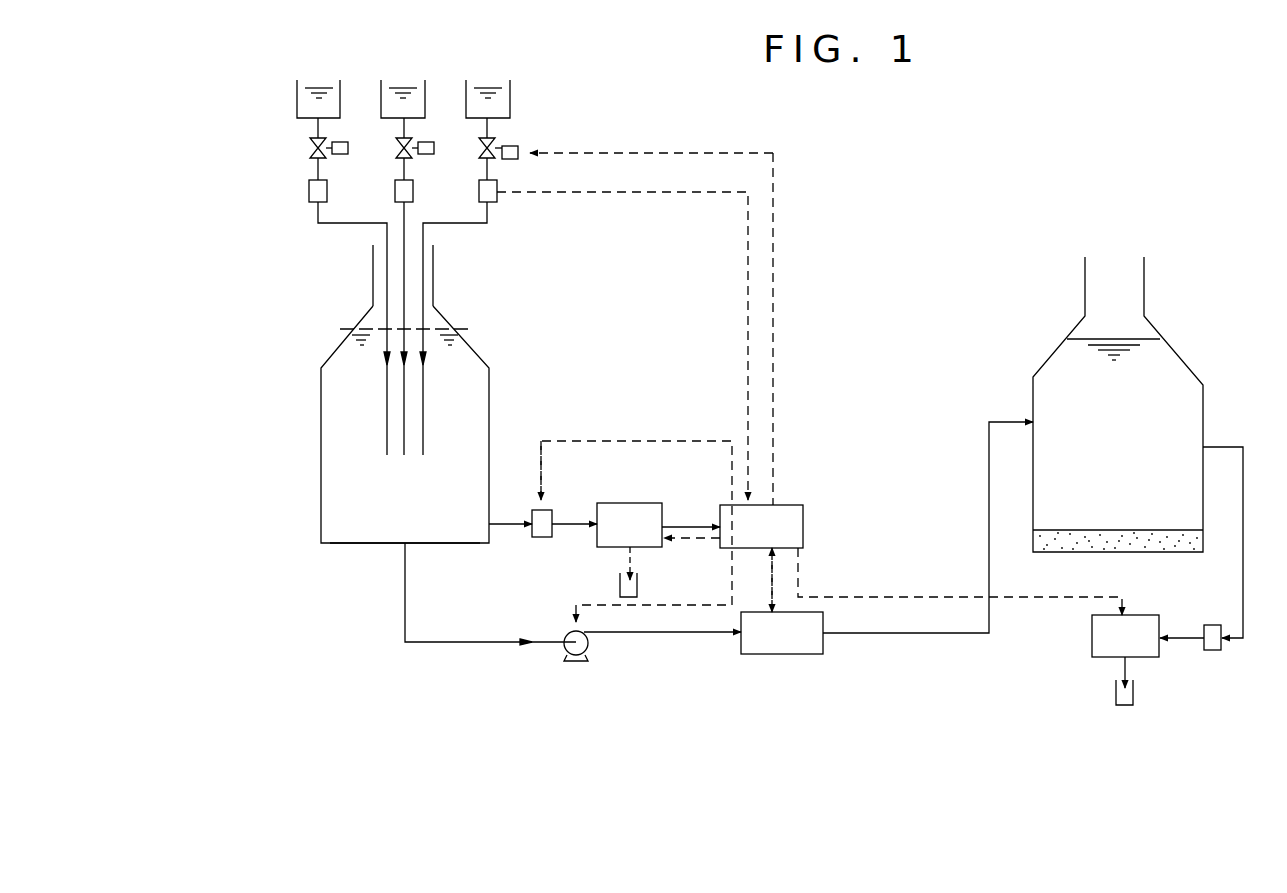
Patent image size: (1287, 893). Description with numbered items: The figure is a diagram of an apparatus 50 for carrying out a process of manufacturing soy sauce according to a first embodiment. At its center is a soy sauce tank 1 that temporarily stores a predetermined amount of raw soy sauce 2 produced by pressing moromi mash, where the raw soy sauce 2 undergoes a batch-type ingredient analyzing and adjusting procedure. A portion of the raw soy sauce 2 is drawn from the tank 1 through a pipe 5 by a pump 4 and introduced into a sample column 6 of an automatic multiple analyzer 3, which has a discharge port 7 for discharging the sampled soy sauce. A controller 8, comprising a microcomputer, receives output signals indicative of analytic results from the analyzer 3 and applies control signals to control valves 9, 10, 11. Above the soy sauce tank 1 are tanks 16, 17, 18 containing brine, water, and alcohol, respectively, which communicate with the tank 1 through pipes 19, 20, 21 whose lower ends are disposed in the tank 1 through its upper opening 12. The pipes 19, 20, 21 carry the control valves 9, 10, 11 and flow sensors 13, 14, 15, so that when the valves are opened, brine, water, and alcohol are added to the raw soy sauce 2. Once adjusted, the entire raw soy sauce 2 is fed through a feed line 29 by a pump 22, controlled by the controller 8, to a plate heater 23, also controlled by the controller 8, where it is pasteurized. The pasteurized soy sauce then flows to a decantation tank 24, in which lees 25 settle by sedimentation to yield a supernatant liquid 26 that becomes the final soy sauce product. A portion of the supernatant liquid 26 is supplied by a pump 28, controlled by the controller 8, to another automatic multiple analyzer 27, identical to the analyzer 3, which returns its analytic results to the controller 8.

The soy sauce tank 1 is at (380, 420).
The raw soy sauce 2 is at (364, 527).
The automatic multiple analyzer 3 is at (548, 592).
The pump 4 is at (545, 537).
The pipe 5 is at (510, 524).
The sample column 6 is at (597, 528).
The discharge port 7 is at (630, 548).
The controller 8 is at (803, 527).
The control valve 9 is at (309, 149).
The control valve 10 is at (395, 149).
The control valve 11 is at (478, 149).
The upper opening 12 is at (433, 244).
The flow sensor 13 is at (309, 191).
The flow sensor 14 is at (395, 191).
The flow sensor 15 is at (497, 200).
The tank 16 is at (297, 95).
The tank 17 is at (381, 100).
The tank 18 is at (510, 98).
The pipe 19 is at (345, 223).
The pipe 20 is at (405, 213).
The pipe 21 is at (478, 224).
The pump 22 is at (575, 661).
The plate heater 23 is at (718, 678).
The decantation tank 24 is at (1123, 423).
The lees 25 is at (1075, 553).
The supernatant liquid 26 is at (1183, 405).
The automatic multiple analyzer 27 is at (1062, 676).
The pump 28 is at (1214, 650).
The feed line 29 is at (460, 642).
The apparatus 50 is at (895, 156).